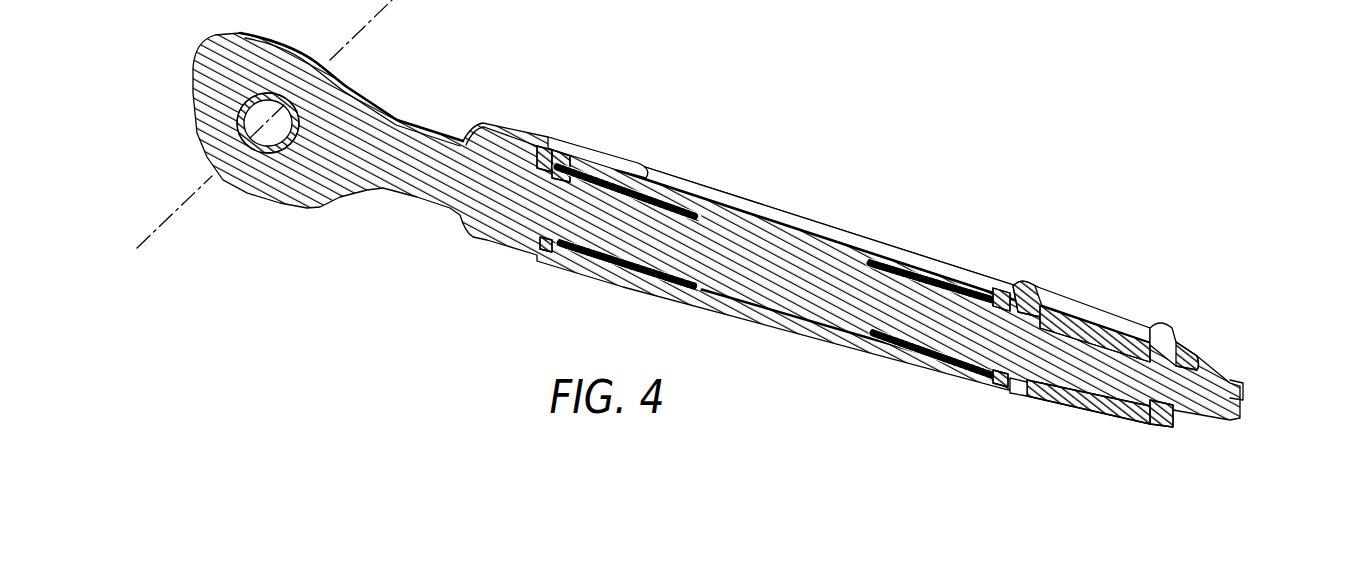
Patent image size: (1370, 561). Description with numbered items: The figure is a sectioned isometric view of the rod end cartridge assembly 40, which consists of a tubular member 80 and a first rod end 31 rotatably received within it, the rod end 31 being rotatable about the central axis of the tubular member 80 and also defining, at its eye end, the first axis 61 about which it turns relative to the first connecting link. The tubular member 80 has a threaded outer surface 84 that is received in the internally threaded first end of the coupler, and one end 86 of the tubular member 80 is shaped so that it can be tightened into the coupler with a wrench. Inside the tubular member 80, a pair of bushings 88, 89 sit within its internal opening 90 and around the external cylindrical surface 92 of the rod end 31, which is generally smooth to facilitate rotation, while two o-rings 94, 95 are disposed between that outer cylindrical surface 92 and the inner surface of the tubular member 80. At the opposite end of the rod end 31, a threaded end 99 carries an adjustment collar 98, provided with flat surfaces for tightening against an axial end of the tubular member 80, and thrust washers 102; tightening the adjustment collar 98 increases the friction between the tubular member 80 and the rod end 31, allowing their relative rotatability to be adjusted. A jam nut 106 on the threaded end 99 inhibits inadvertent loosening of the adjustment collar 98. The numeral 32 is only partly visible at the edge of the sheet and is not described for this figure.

The first rod end 31 is at (412, 127).
The proximal portion 32 is at (1238, 5).
The rod end cartridge assembly 40 is at (696, 228).
The first axis 61 is at (173, 213).
The tubular member 80 is at (983, 285).
The threaded outer surface 84 is at (1003, 409).
The one end of the tubular member 86 is at (607, 152).
The bushing 88 is at (597, 257).
The bushing 89 is at (925, 262).
The internal opening 90 is at (683, 205).
The external cylindrical surface 92 is at (773, 215).
The o-ring 94 is at (553, 150).
The o-ring 95 is at (1005, 293).
The adjustment collar 98 is at (1080, 315).
The threaded end 99 is at (1093, 377).
The thrust washers 102 is at (527, 153).
The jam nut 106 is at (1162, 338).